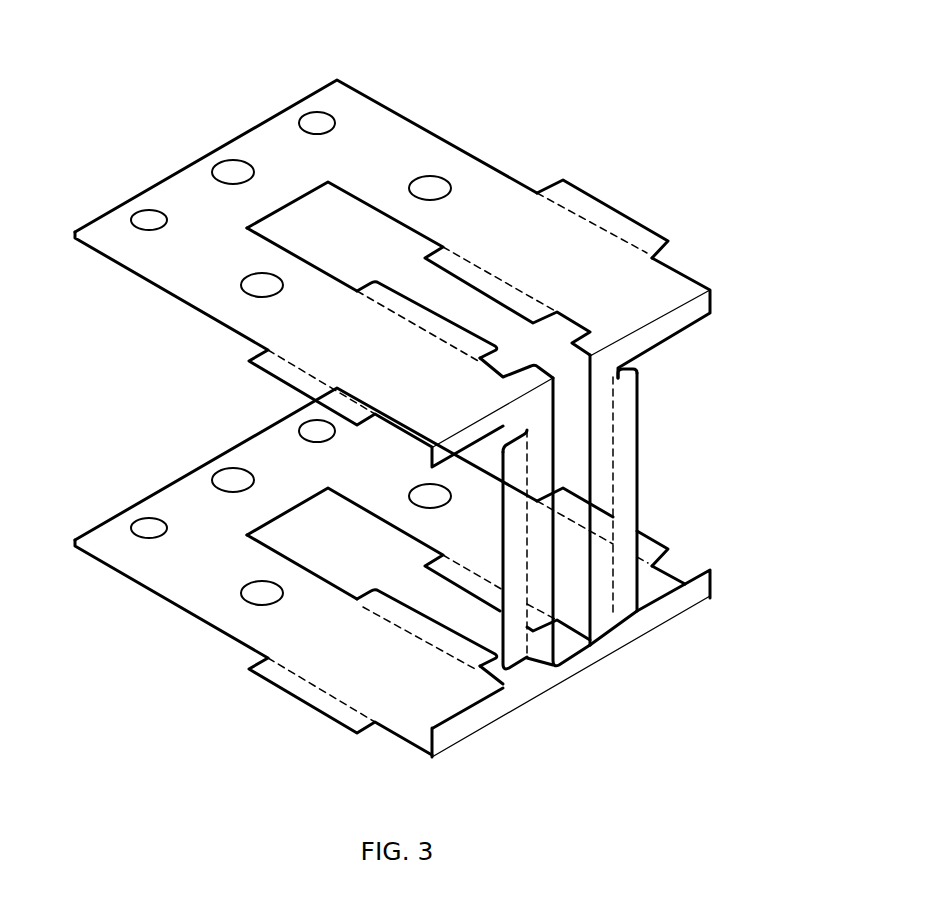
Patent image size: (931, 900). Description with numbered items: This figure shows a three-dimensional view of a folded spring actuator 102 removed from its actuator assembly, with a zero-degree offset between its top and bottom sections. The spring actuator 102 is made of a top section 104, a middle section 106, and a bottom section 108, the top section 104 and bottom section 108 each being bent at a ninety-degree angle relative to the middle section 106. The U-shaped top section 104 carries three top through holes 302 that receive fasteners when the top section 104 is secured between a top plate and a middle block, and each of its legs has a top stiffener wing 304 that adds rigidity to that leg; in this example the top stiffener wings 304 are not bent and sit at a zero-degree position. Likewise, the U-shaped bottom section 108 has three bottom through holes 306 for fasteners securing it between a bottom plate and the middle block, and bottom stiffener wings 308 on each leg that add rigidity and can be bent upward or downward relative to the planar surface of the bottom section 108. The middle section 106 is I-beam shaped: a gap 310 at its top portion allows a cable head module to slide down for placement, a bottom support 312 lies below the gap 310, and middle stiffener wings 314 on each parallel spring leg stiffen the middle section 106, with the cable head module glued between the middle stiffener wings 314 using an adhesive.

The spring actuator 102 is at (185, 104).
The top section 104 is at (503, 190).
The middle section 106 is at (688, 315).
The bottom section 108 is at (163, 565).
The top through holes 302 is at (264, 273).
The top stiffener wings 304 is at (525, 307).
The bottom through holes 306 is at (247, 587).
The bottom stiffener wings 308 is at (647, 548).
The gap 310 is at (563, 368).
The bottom support 312 is at (577, 660).
The middle stiffener wings 314 is at (625, 573).